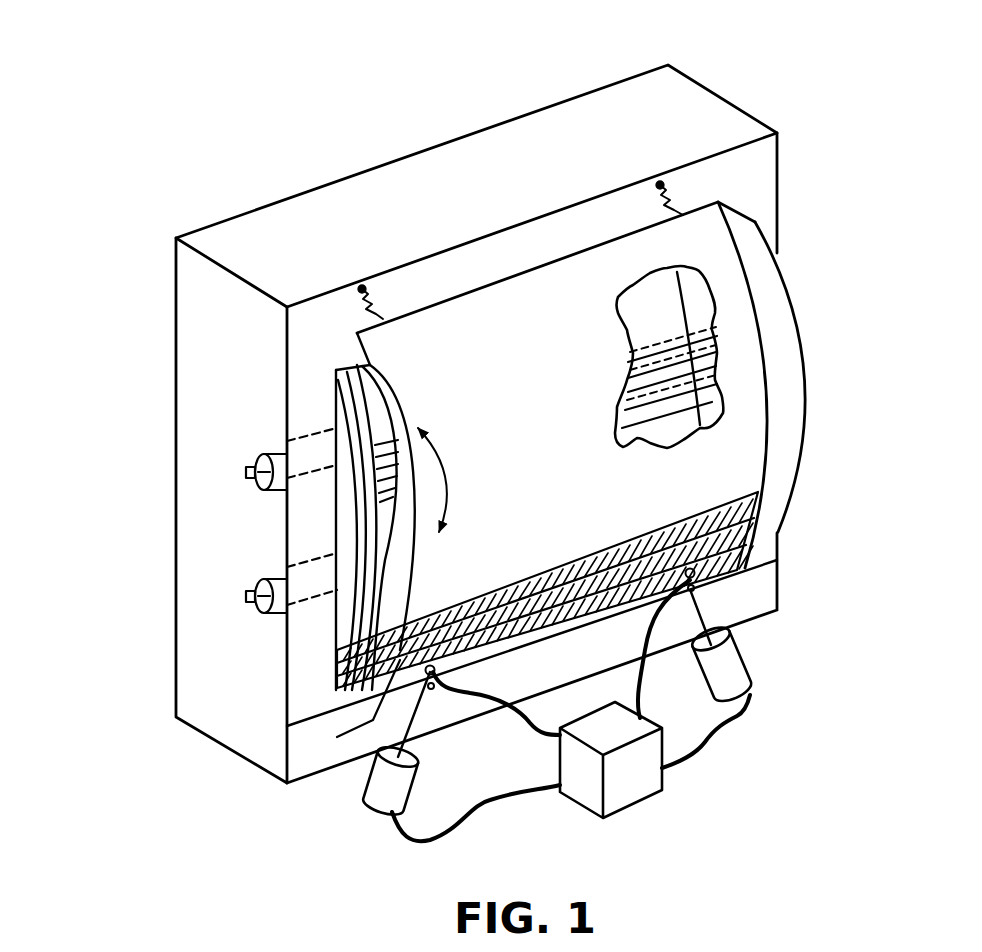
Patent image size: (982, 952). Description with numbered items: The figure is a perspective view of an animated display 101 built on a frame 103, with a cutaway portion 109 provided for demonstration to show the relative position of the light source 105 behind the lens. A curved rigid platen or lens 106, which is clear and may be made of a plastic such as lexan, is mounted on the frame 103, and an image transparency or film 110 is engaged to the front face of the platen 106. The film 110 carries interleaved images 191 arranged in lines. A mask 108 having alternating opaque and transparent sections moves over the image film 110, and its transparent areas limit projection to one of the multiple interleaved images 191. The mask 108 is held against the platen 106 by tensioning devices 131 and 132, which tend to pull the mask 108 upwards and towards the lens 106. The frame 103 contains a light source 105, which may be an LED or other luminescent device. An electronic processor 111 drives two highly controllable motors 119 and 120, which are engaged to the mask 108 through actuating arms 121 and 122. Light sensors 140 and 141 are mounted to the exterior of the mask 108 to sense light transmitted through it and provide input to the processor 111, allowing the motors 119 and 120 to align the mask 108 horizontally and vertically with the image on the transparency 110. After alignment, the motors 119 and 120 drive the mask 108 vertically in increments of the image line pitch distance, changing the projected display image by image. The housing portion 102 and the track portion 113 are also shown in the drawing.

The animated display 101 is at (570, 133).
The housing 102 is at (756, 168).
The frame 103 is at (208, 416).
The light source 105 is at (250, 477).
The curved rigid platen or lens 106 is at (352, 500).
The mask 108 is at (778, 392).
The cutaway portion 109 is at (728, 420).
The image transparency or film 110 is at (390, 587).
The electronic processor 111 is at (639, 815).
The track 113 is at (719, 581).
The motor 119 is at (366, 814).
The motor 120 is at (755, 694).
The actuating arm 121 is at (398, 725).
The actuating arm 122 is at (714, 610).
The tensioning device 131 is at (382, 293).
The tensioning device 132 is at (682, 186).
The light sensor 140 is at (290, 727).
The light sensor 141 is at (701, 573).
The interleaved images 191 is at (385, 436).